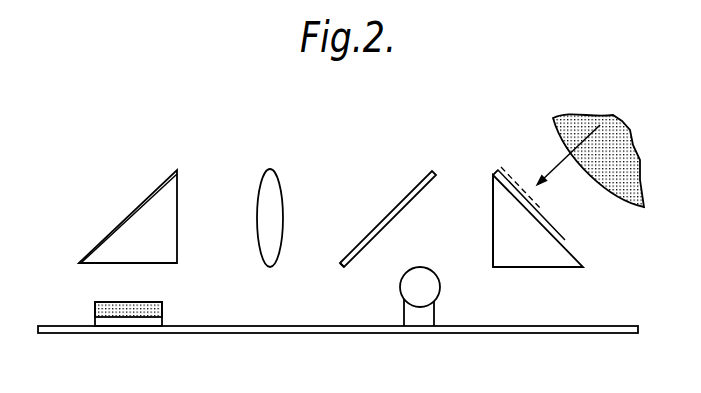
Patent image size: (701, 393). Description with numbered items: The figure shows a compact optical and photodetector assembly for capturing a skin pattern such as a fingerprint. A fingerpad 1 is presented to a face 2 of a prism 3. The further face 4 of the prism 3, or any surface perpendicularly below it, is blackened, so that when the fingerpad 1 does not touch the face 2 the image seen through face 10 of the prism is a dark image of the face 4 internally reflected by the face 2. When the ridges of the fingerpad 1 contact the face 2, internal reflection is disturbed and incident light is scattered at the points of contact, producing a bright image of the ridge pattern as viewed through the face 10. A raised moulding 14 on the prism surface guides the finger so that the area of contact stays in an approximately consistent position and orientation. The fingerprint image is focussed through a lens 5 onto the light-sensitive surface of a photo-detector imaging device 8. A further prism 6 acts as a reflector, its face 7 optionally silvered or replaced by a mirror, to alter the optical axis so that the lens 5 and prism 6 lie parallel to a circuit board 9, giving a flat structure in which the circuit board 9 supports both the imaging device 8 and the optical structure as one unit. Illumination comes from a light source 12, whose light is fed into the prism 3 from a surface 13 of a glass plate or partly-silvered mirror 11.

The fingerpad 1 is at (614, 117).
The face of prism 2 is at (544, 222).
The prism 3 is at (514, 240).
The further face of prism 4 is at (568, 268).
The lens 5 is at (265, 186).
The further prism 6 is at (173, 200).
The face of further prism 7 is at (156, 190).
The photo-detector imaging device 8 is at (156, 305).
The circuit board 9 is at (67, 334).
The face of prism 10 is at (492, 198).
The glass plate 11 is at (405, 190).
The light source 12 is at (418, 297).
The surface of glass plate 13 is at (364, 248).
The raised moulding 14 is at (503, 173).